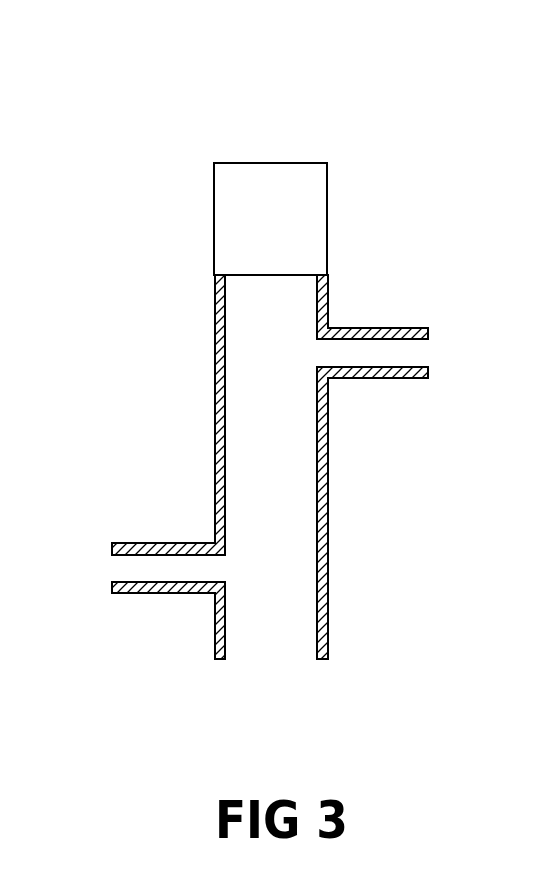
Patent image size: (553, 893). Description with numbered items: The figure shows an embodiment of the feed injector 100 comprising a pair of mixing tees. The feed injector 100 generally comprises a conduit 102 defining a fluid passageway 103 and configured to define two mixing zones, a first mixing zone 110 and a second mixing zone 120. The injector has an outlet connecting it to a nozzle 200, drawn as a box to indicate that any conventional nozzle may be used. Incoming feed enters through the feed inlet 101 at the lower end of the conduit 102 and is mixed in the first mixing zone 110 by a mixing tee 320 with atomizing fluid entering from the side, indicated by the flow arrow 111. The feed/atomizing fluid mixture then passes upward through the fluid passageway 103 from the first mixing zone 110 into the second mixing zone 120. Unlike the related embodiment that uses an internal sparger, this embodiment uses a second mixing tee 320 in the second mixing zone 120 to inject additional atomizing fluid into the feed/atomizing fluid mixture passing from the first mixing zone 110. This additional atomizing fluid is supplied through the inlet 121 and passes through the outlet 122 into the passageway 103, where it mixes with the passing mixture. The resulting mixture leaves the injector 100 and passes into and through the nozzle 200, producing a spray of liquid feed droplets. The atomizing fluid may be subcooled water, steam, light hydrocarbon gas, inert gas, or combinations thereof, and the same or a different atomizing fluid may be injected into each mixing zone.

The feed injector 100 is at (106, 154).
The nozzle 200 is at (327, 208).
The second mixing zone 120 is at (252, 334).
The outlet 122 is at (337, 353).
The inlet 121 is at (446, 353).
The mixing tee 320 is at (199, 602).
The fluid passageway 103 is at (300, 478).
The conduit 102 is at (339, 553).
The first gas flow 111 is at (102, 569).
The first mixing zone 110 is at (286, 596).
The feed inlet 101 is at (272, 653).